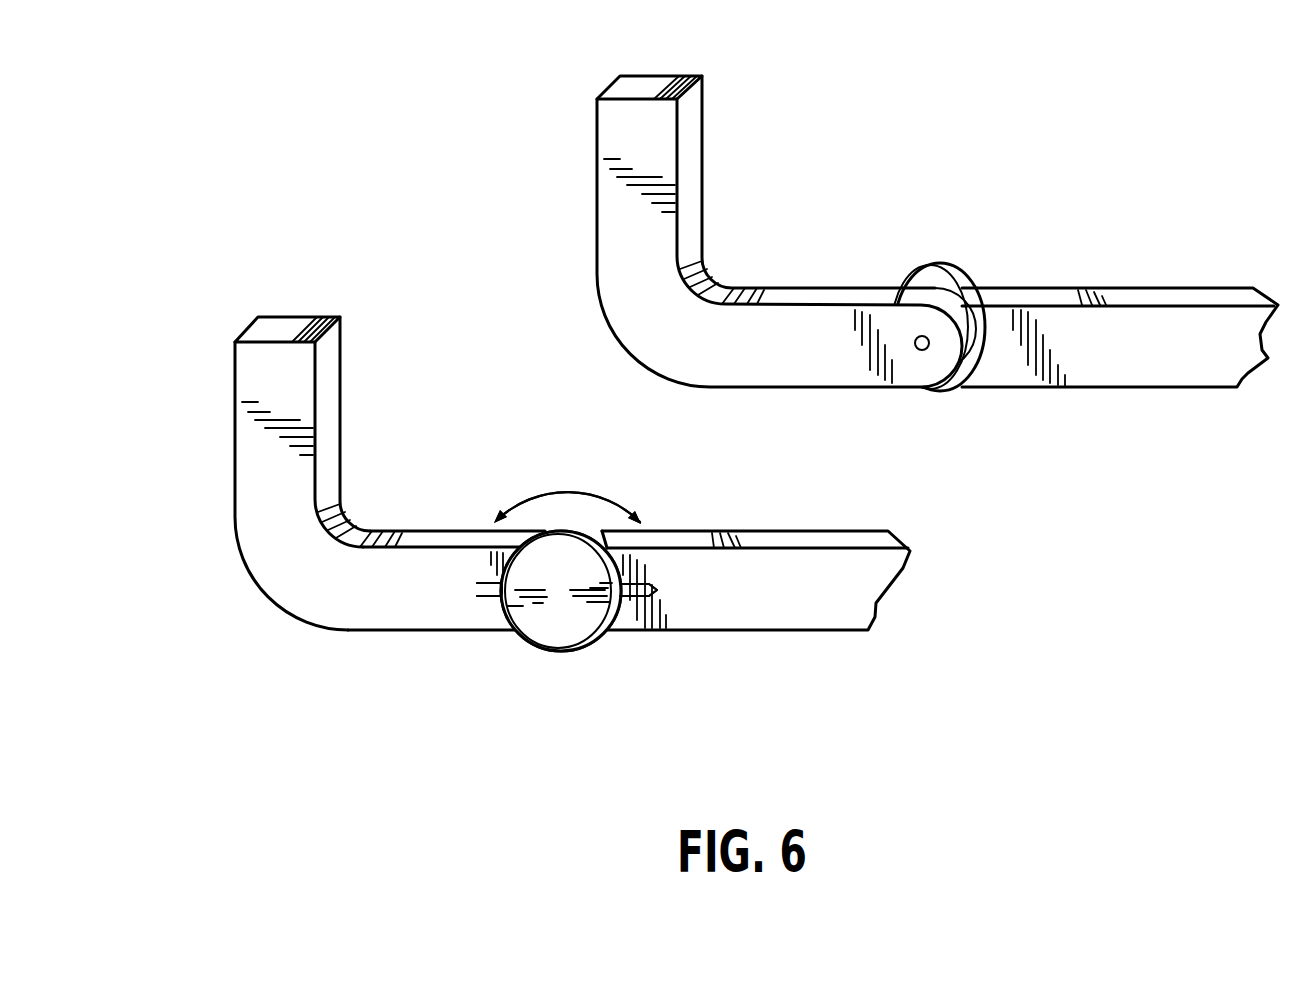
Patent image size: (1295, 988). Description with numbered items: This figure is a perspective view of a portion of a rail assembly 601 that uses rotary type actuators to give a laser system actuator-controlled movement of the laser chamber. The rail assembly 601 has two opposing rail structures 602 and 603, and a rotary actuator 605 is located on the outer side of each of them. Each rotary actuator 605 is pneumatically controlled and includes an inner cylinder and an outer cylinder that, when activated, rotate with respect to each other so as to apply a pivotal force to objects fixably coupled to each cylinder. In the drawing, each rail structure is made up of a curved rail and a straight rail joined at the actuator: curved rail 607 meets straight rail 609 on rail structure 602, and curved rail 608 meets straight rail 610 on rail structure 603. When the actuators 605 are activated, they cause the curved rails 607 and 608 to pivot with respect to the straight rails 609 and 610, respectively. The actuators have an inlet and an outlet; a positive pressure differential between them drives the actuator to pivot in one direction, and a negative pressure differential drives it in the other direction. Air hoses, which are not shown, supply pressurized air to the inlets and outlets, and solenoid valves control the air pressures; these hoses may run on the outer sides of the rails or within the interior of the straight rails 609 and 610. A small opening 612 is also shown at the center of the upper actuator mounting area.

The rail assembly 601 is at (603, 40).
The rail structure 602 is at (779, 231).
The rail structure 603 is at (337, 493).
The rotary actuator 605 is at (942, 268).
The curved rail 607 is at (828, 366).
The curved rail 608 is at (417, 580).
The straight rail 609 is at (1166, 368).
The straight rail 610 is at (756, 580).
The hinge pin hole 612 is at (916, 350).